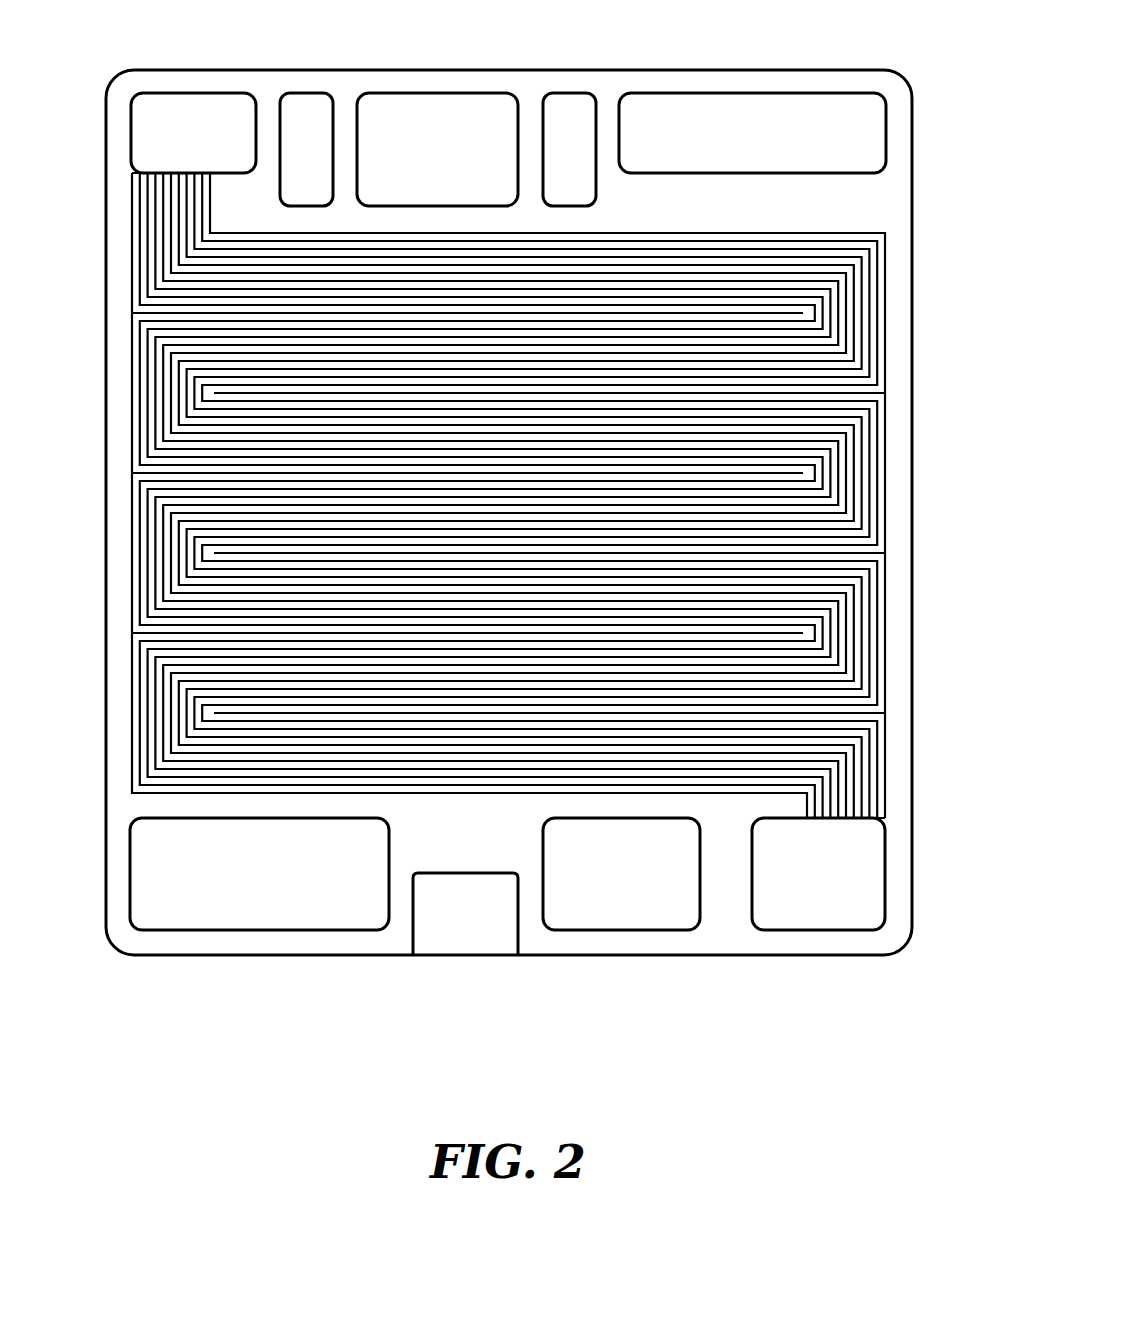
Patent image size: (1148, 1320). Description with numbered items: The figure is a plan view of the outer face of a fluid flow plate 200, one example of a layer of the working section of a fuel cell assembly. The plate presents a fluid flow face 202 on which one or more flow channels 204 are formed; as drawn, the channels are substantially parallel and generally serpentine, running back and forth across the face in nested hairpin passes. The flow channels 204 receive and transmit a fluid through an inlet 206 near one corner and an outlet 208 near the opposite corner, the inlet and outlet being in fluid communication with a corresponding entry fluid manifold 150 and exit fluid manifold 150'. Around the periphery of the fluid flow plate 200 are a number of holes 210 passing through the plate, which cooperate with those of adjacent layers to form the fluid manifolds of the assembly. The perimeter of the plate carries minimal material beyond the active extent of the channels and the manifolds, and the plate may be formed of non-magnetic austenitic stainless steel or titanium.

The fluid flow plate 200 is at (539, 518).
The fluid flow face 202 is at (876, 203).
The flow channels 204 is at (885, 287).
The inlet port 206 is at (178, 171).
The outlet port 208 is at (832, 820).
The entry fluid manifold 150 is at (204, 88).
The exit fluid manifold 150' is at (844, 926).
The holes 210 is at (685, 140).